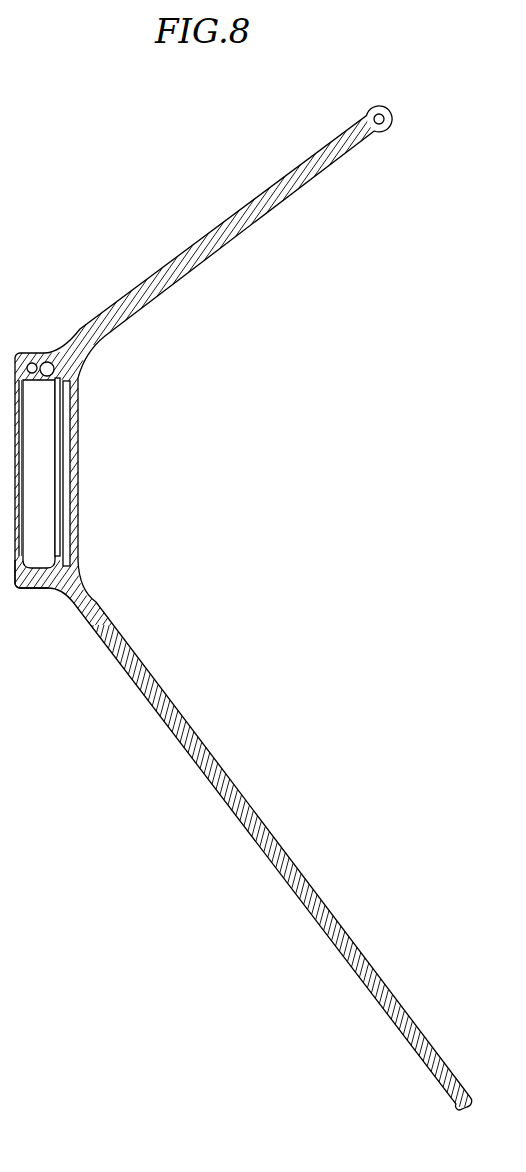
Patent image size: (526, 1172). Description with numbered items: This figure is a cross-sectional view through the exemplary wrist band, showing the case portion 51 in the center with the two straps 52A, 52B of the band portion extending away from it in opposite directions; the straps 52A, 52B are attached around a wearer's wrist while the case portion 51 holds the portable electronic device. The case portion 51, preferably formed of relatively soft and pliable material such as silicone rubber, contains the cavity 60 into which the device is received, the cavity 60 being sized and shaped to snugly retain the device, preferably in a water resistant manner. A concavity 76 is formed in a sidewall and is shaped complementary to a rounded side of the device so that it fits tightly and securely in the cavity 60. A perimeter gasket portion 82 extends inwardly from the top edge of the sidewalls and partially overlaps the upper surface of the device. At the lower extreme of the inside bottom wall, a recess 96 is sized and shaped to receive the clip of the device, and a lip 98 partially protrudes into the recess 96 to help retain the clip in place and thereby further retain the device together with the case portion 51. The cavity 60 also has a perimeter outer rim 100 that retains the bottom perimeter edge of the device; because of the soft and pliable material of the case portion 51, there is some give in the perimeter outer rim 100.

The case portion 51 is at (100, 562).
The strap 52A is at (283, 881).
The strap 52B is at (263, 190).
The cavity 60 is at (40, 430).
The concavity 76 is at (23, 352).
The perimeter gasket portion 82 is at (15, 557).
The recess 96 is at (57, 490).
The lip 98 is at (59, 384).
The perimeter outer rim 100 is at (52, 373).